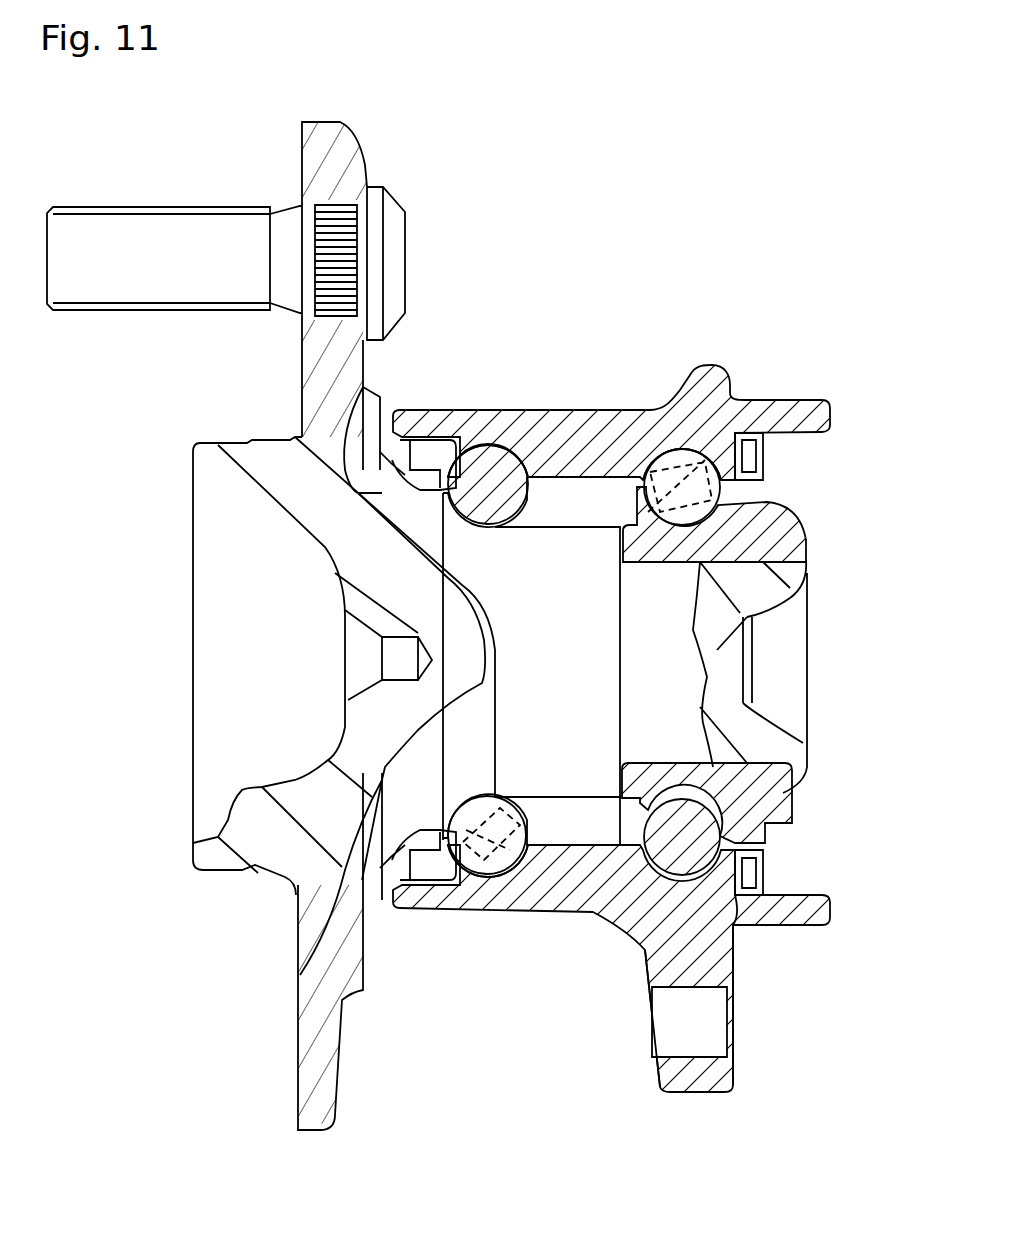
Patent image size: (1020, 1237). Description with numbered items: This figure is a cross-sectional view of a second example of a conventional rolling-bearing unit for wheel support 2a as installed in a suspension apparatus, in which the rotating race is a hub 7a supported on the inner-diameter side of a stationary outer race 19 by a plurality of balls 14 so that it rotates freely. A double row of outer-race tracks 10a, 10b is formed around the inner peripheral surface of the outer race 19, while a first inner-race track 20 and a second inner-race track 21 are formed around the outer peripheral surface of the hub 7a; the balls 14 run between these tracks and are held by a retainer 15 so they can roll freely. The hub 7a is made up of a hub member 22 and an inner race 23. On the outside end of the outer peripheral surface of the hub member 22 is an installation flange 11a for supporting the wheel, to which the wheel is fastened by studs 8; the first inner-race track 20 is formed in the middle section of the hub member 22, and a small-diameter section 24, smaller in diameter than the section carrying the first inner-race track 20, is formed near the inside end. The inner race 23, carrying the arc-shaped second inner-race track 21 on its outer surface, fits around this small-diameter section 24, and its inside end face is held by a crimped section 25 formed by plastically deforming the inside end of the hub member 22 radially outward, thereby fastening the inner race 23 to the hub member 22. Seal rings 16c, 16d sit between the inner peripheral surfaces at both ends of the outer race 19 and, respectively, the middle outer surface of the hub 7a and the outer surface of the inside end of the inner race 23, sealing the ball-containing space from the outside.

The stud 8 is at (175, 240).
The hub 7a is at (322, 423).
The rolling-bearing unit for wheel support 2a is at (800, 368).
The retainer 15 is at (480, 470).
The ball 14 is at (640, 470).
The second inner-race track 21 is at (725, 507).
The crimped section 25 is at (783, 552).
The first inner-race track 20 is at (466, 508).
The hub member 22 is at (465, 745).
The small-diameter section 24 is at (743, 767).
The inner race 23 is at (775, 797).
The seal ring 16c is at (385, 885).
The seal ring 16d is at (763, 873).
The outer-race track 10a is at (487, 875).
The outer-race track 10b is at (727, 925).
The outer race 19 is at (643, 930).
The installation flange 11a is at (322, 1067).